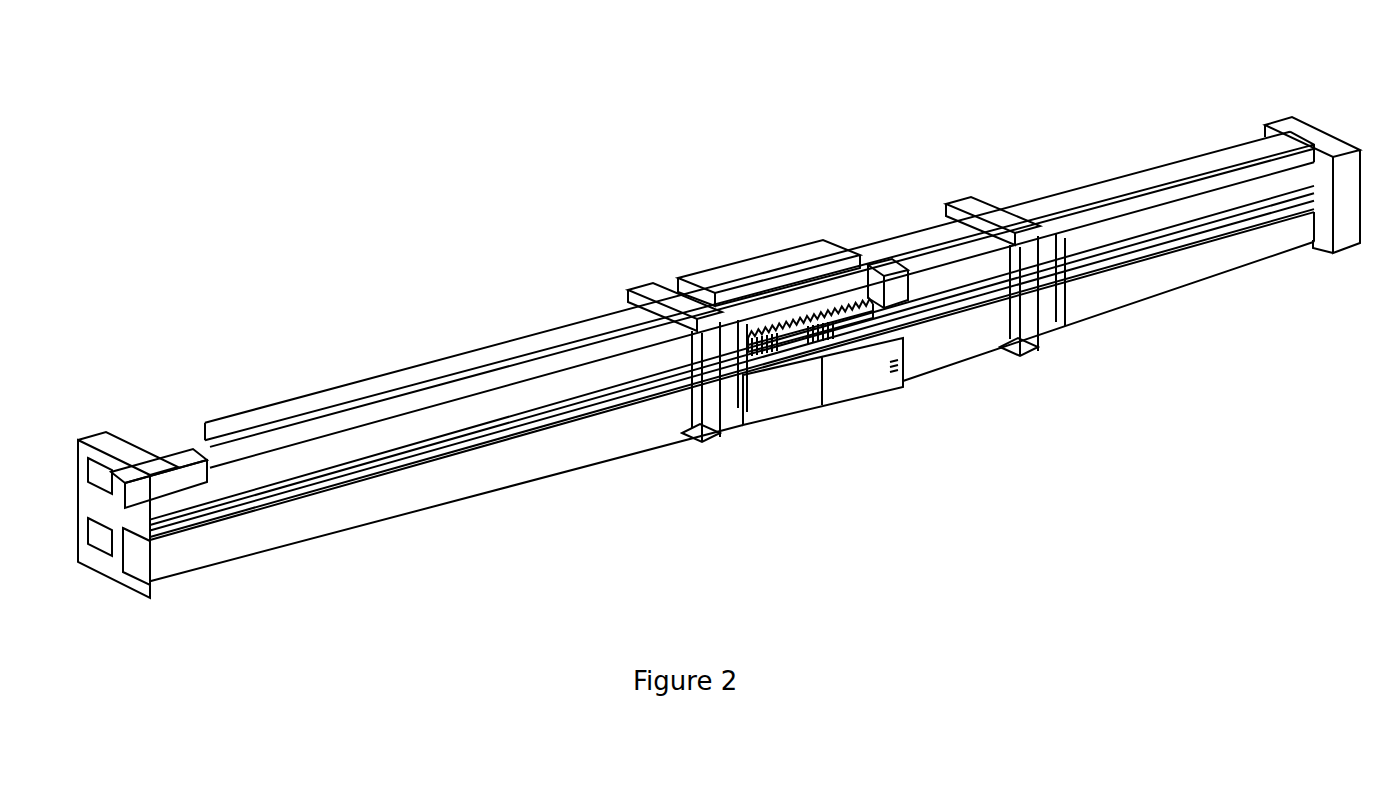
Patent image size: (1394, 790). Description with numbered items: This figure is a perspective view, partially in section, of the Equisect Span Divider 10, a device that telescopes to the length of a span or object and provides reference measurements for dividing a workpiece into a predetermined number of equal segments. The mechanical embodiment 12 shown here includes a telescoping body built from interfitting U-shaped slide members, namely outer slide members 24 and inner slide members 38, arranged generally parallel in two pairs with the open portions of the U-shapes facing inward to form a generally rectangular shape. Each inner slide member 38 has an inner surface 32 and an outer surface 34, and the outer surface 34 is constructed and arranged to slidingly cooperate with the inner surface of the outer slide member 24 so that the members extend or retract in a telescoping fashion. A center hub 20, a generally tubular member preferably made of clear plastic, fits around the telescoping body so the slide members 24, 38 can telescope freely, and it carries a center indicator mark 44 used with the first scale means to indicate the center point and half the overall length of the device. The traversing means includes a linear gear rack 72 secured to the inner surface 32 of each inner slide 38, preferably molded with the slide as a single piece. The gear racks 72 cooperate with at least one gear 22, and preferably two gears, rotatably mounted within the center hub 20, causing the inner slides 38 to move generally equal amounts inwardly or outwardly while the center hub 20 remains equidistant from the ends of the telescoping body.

The Equisect Span Divider 10 is at (366, 156).
The mechanical embodiment 12 is at (316, 372).
The center hub 20 is at (796, 240).
The gear 22 is at (775, 350).
The outer slide member 24 is at (322, 452).
The inner surface 32 is at (148, 535).
The outer surface 34 is at (176, 474).
The inner slide member 38 is at (180, 495).
The center indicator mark 44 is at (770, 262).
The linear gear rack 72 is at (875, 308).